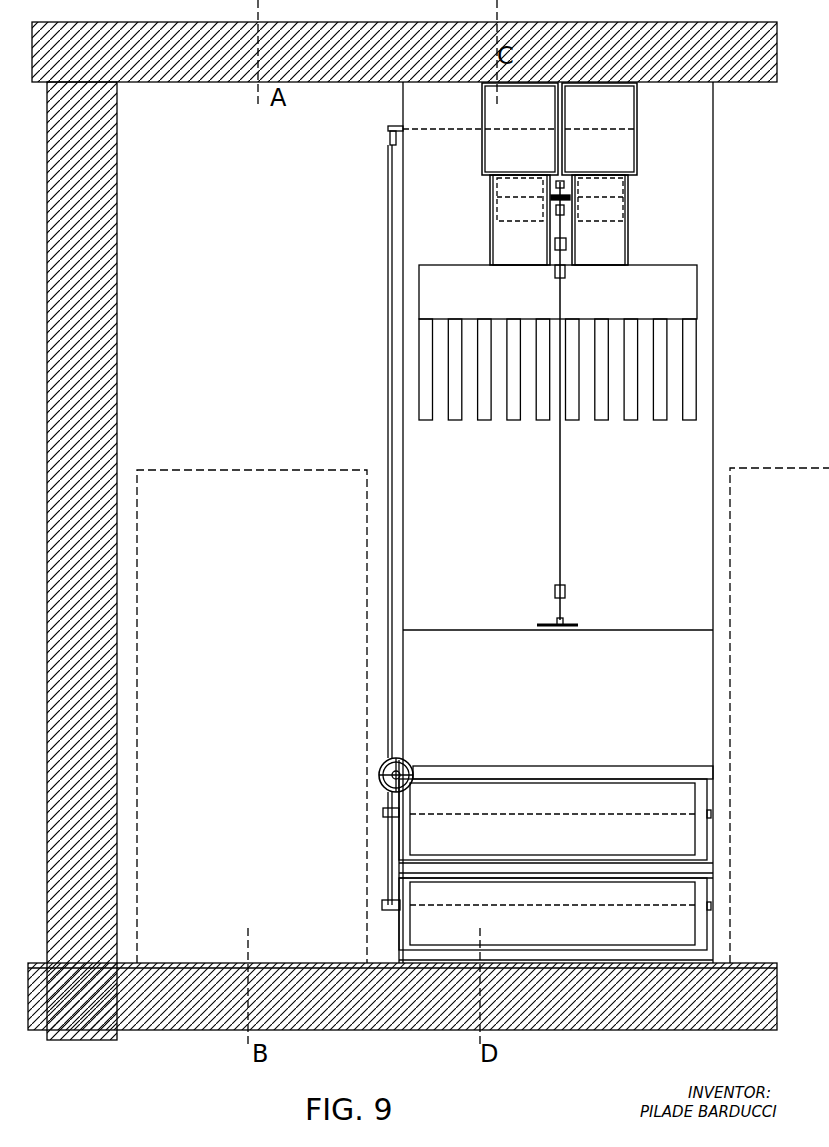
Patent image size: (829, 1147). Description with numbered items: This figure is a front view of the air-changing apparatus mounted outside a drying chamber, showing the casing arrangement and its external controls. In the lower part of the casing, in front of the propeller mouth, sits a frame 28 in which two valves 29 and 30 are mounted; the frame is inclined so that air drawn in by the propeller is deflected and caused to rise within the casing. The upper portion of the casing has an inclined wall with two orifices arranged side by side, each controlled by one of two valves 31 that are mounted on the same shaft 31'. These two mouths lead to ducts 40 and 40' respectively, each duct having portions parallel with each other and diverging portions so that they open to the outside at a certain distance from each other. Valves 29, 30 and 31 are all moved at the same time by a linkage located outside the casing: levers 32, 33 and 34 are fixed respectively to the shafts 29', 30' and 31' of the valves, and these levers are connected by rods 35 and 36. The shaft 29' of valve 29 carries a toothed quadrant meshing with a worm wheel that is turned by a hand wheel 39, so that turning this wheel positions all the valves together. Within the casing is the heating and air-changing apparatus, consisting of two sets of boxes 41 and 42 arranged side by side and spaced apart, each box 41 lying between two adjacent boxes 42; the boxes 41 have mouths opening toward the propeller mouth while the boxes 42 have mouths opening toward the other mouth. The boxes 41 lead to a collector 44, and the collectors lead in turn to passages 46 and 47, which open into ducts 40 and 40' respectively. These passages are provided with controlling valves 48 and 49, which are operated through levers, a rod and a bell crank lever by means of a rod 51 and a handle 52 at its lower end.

The frame 28 is at (596, 772).
The valve 29 is at (571, 819).
The shaft of valve 29 29' is at (552, 777).
The valve 30 is at (570, 915).
The shaft of valve 30 30' is at (552, 896).
The valves 31 is at (561, 146).
The shaft of valves 31 31' is at (423, 108).
The lever 32 is at (383, 804).
The lever 33 is at (382, 907).
The lever 34 is at (389, 140).
The rod 35 is at (386, 841).
The rod 36 is at (388, 394).
The hand wheel 39 is at (378, 772).
The duct 40 is at (506, 129).
The duct 40' is at (618, 129).
The boxes 41 is at (456, 420).
The boxes 42 is at (427, 420).
The collector 44 is at (558, 292).
The passage 46 is at (505, 245).
The passage 47 is at (616, 243).
The controlling valve 48 is at (502, 216).
The controlling valve 49 is at (607, 214).
The rod 51 is at (562, 492).
The handle 52 is at (568, 624).